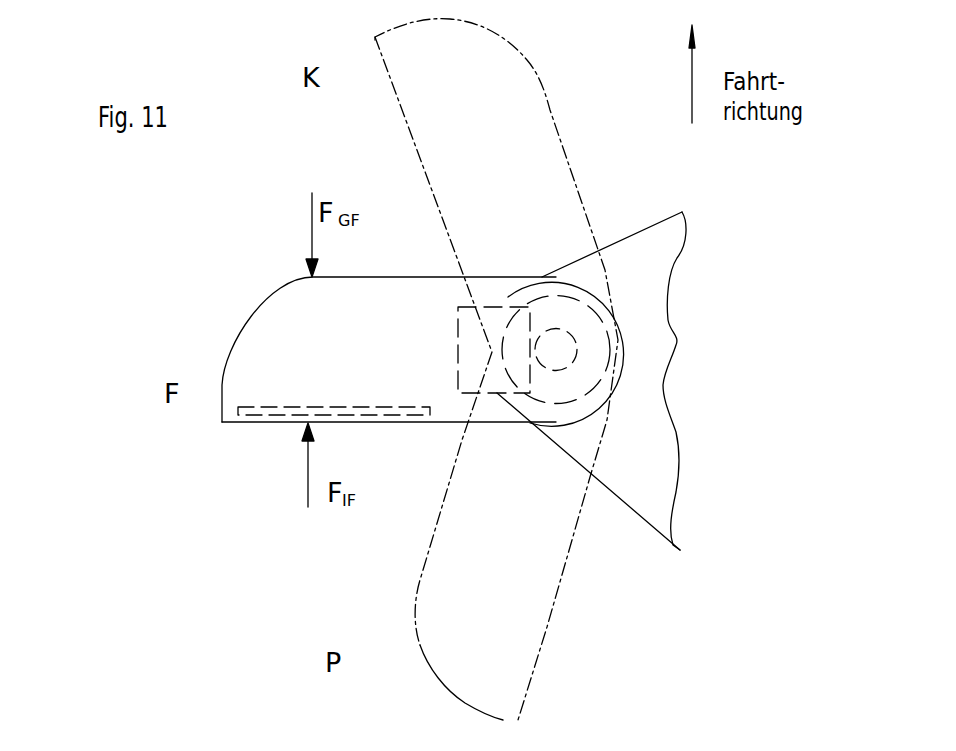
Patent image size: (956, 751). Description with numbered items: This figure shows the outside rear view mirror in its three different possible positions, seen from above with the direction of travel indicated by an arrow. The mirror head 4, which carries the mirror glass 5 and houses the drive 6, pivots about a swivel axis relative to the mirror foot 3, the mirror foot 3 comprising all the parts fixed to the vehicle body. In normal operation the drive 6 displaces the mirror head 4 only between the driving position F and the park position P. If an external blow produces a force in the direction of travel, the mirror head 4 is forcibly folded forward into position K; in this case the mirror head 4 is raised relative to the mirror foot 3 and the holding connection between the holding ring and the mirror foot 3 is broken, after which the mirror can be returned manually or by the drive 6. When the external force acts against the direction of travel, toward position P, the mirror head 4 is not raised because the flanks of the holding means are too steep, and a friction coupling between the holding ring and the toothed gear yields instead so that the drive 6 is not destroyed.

The mirror foot 3 is at (648, 477).
The mirror head 4 is at (287, 281).
The mirror glass 5 is at (302, 414).
The drive 6 is at (458, 335).